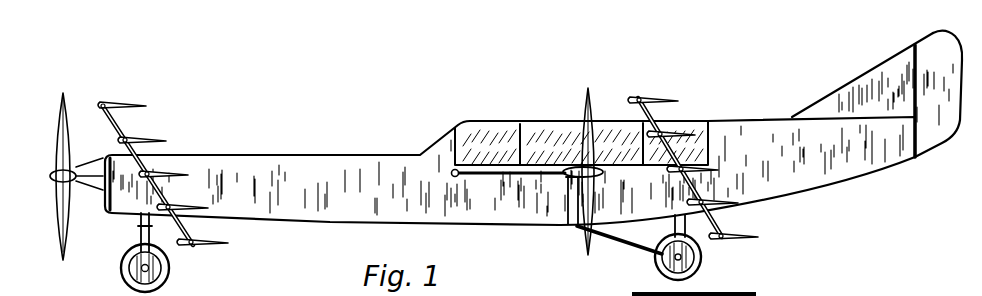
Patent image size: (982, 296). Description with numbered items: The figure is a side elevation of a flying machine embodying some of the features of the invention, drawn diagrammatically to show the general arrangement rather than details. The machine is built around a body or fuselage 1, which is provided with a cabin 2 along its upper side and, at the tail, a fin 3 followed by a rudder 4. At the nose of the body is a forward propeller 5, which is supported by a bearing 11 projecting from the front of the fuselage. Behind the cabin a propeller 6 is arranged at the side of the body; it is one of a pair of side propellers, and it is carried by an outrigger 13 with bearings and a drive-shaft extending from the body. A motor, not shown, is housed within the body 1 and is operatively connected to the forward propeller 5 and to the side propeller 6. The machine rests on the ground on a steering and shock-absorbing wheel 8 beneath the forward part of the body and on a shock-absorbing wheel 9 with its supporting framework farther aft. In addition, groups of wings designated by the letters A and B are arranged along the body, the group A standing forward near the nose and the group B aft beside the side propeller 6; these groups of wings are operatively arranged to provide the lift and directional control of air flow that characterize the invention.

The body or fuselage 1 is at (303, 160).
The cabin 2 is at (492, 127).
The fin 3 is at (870, 81).
The rudder 4 is at (937, 140).
The forward propeller 5 is at (62, 208).
The propeller 6 is at (588, 232).
The steering and shock-absorbing wheel 8 is at (168, 273).
The shock-absorbing wheel 9 is at (698, 257).
The bearing 11 is at (93, 187).
The outrigger 13 is at (563, 176).
The group of wings A is at (125, 102).
The group of wings B is at (655, 93).